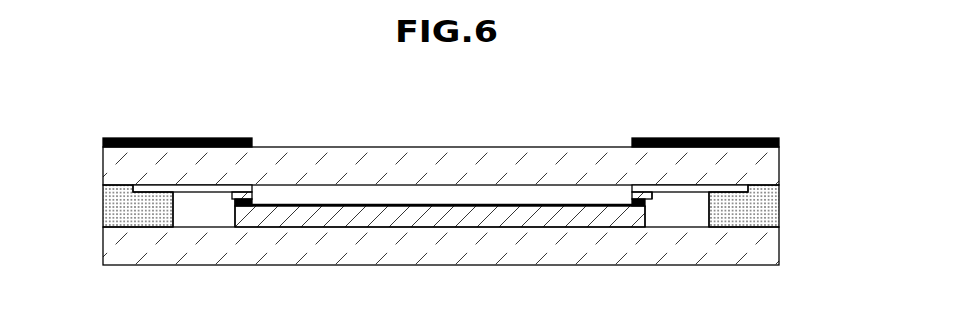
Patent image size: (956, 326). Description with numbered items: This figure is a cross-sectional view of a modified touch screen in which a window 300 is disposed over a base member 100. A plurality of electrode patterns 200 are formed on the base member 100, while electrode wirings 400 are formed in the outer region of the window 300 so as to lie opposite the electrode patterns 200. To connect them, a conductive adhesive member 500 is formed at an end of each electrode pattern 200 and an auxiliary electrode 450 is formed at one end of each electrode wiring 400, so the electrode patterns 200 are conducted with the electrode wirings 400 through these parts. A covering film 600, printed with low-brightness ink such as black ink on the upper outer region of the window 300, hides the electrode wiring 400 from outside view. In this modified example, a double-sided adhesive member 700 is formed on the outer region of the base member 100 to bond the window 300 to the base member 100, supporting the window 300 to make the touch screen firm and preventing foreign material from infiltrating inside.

The base member 100 is at (770, 247).
The electrode pattern 200 is at (603, 220).
The window 300 is at (770, 168).
The electrode wiring 400 is at (750, 197).
The auxiliary electrode 450 is at (653, 195).
The conductive adhesive member 500 is at (645, 206).
The covering film 600 is at (762, 141).
The double-sided adhesive member 700 is at (103, 205).